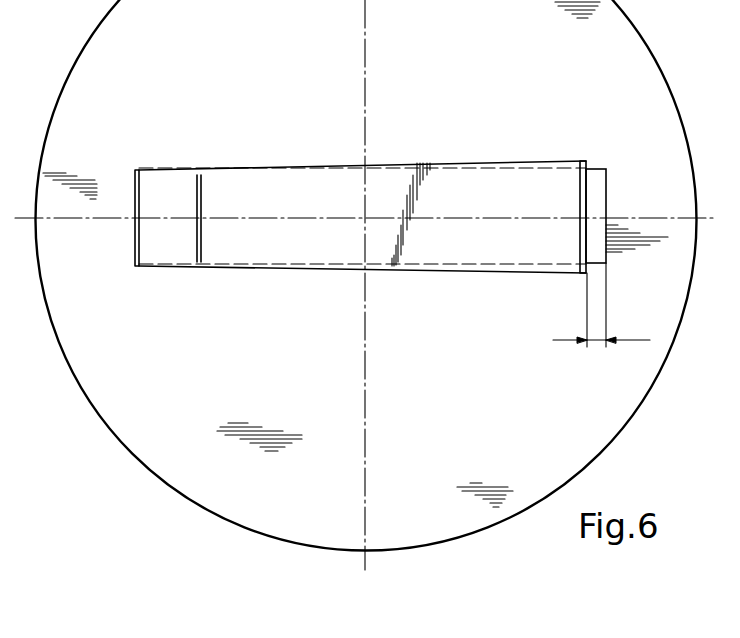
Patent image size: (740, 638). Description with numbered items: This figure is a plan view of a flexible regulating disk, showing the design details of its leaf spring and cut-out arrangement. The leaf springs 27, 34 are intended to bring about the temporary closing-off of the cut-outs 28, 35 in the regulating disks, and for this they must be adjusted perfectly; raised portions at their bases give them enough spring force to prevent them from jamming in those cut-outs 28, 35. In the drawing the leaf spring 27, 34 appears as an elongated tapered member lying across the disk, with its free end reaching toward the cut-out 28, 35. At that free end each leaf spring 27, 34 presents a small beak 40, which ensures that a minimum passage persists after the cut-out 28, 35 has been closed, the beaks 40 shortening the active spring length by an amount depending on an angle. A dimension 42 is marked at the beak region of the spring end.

The leaf spring 27 is at (442, 186).
The leaf spring 34 is at (436, 180).
The beak 40 is at (582, 160).
The cut-out 28 is at (627, 203).
The cut-out 35 is at (598, 192).
The width dimension 42 is at (601, 319).